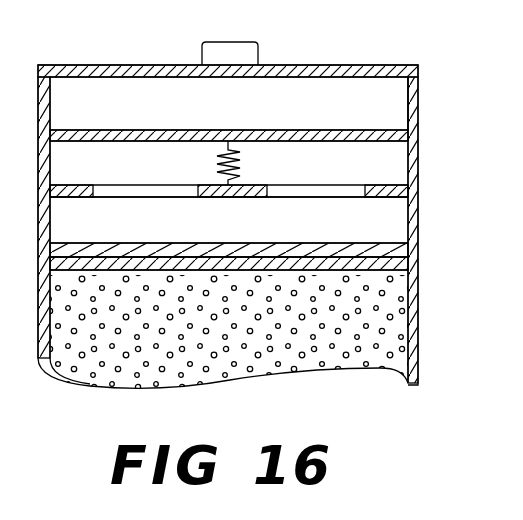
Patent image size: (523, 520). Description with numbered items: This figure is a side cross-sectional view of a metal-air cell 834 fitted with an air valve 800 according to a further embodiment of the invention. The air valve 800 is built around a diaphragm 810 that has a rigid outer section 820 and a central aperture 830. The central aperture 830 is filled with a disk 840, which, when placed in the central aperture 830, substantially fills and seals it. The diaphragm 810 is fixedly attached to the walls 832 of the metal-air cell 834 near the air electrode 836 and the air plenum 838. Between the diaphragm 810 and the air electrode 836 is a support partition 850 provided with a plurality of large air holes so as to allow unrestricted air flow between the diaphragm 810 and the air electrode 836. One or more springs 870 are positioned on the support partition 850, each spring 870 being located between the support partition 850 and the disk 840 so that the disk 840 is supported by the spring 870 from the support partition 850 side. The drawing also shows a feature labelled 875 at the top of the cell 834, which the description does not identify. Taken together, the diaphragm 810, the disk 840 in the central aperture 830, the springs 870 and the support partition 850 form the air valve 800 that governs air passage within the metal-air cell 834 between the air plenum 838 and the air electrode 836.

The air valve 800 is at (90, 47).
The terminal cap 875 is at (431, 62).
The metal-air cell 834 is at (420, 396).
The central aperture 830 is at (164, 130).
The diaphragm 810 is at (314, 130).
The walls 832 is at (407, 108).
The rigid outer section 820 is at (107, 143).
The disk 840 is at (196, 142).
The springs 870 is at (238, 165).
The support partition 850 is at (70, 204).
The air plenum 838 is at (198, 233).
The air electrode 836 is at (278, 243).